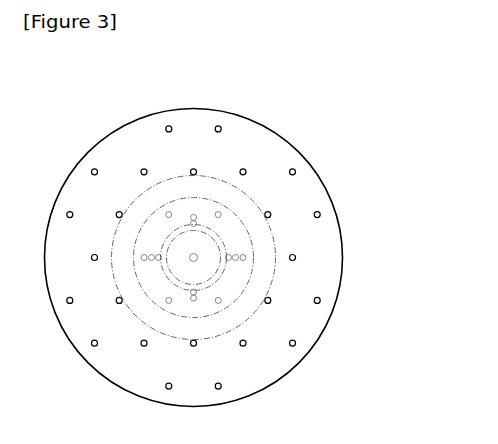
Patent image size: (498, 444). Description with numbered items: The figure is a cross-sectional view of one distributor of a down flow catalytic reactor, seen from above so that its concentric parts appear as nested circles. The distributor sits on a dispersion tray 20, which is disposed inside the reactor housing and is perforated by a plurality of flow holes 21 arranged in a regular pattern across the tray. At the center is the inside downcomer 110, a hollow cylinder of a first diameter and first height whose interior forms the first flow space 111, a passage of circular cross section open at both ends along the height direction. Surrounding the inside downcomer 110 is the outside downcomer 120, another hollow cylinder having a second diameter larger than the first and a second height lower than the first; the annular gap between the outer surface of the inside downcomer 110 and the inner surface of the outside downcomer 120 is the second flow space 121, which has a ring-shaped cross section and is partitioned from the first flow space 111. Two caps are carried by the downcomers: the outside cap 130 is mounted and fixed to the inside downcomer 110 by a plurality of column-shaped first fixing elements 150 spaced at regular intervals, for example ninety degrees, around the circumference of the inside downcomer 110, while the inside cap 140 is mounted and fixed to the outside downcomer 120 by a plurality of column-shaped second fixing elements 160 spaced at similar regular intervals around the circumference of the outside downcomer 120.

The dispersion tray 20 is at (305, 158).
The flow holes 21 is at (292, 170).
The inside downcomer 110 is at (177, 277).
The first flow space 111 is at (176, 250).
The outside downcomer 120 is at (220, 285).
The second flow space 121 is at (222, 244).
The outside cap 130 is at (220, 178).
The inside cap 140 is at (255, 243).
The first fixing element 150 is at (192, 292).
The second fixing element 160 is at (196, 222).